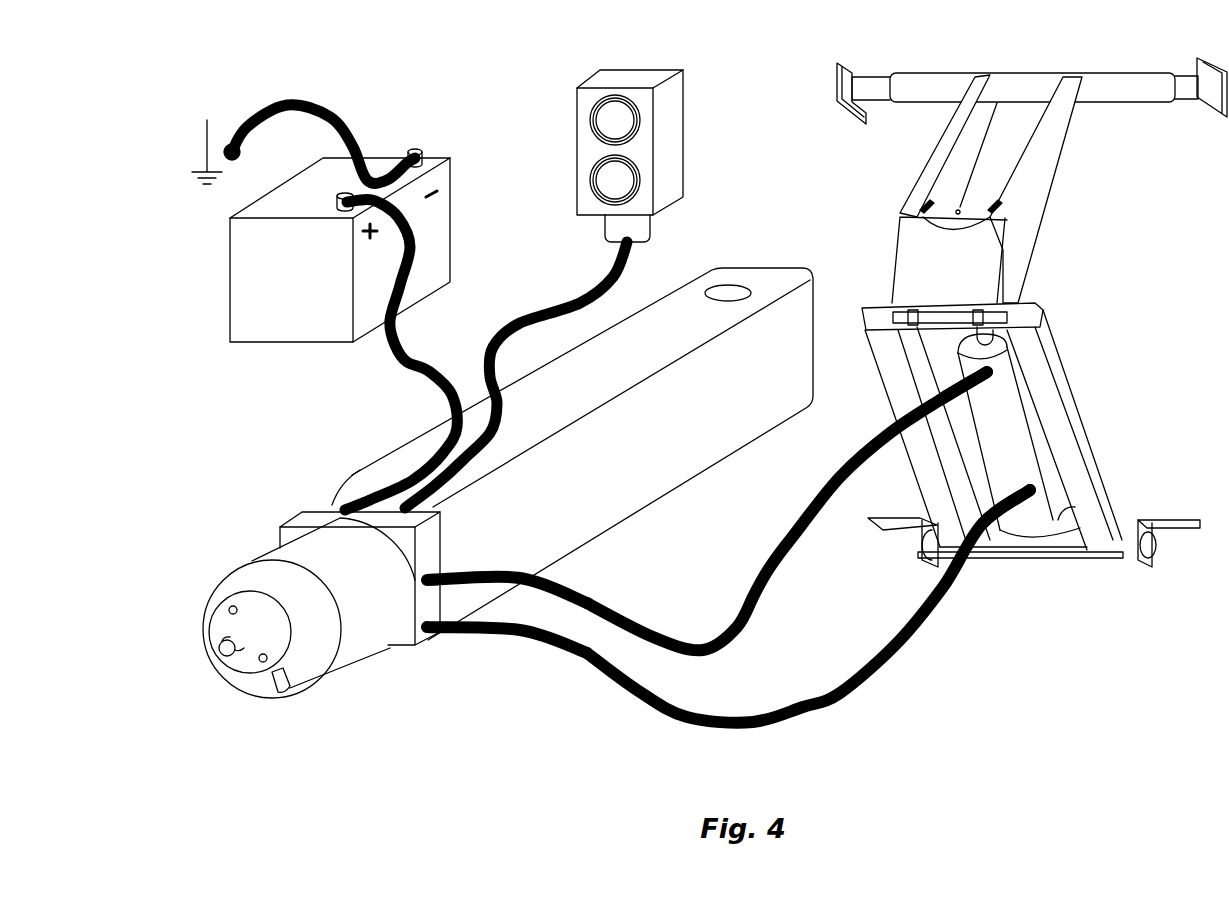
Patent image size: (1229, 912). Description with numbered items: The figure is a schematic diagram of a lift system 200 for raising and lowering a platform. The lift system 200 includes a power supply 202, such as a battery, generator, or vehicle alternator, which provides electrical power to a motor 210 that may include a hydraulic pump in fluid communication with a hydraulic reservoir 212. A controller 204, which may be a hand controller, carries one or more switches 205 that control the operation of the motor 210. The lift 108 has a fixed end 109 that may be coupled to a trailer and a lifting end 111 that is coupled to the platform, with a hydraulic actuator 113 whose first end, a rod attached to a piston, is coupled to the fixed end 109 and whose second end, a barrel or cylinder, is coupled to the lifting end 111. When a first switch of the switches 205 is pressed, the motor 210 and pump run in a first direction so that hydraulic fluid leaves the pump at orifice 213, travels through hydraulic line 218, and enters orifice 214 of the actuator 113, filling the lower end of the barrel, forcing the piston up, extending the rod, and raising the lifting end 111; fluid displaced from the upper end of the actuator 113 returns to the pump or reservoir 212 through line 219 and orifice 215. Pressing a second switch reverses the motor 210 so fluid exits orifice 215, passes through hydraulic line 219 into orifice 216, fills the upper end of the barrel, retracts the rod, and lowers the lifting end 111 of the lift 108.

The lift 108 is at (1032, 312).
The fixed end 109 is at (1067, 377).
The lifting end 111 is at (1072, 145).
The actuator 113 is at (1027, 437).
The lift system 200 is at (408, 104).
The power supply 202 is at (450, 173).
The controller 204 is at (599, 270).
The switches 205 is at (620, 180).
The motor 210 is at (273, 510).
The hydraulic reservoir 212 is at (602, 502).
The orifice 213 is at (427, 633).
The orifice 214 is at (1027, 495).
The orifice 215 is at (430, 583).
The orifice 216 is at (893, 403).
The hydraulic line 218 is at (807, 720).
The hydraulic line 219 is at (777, 573).